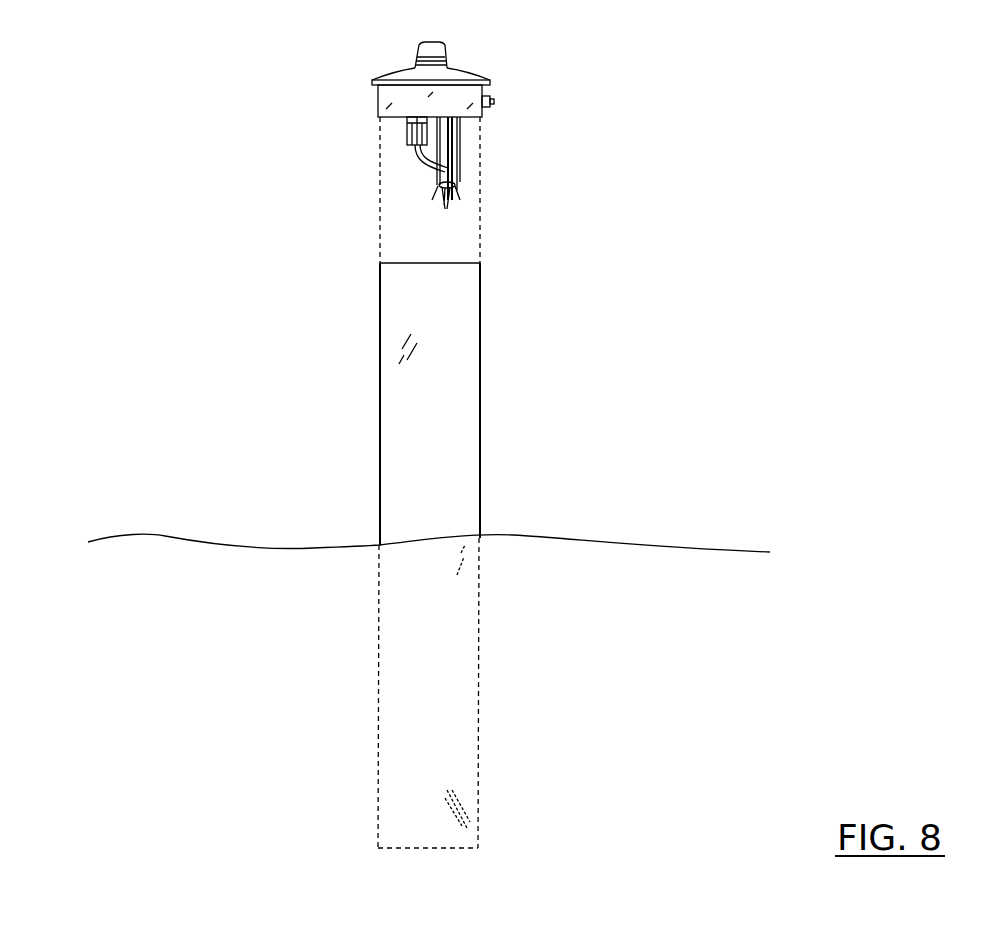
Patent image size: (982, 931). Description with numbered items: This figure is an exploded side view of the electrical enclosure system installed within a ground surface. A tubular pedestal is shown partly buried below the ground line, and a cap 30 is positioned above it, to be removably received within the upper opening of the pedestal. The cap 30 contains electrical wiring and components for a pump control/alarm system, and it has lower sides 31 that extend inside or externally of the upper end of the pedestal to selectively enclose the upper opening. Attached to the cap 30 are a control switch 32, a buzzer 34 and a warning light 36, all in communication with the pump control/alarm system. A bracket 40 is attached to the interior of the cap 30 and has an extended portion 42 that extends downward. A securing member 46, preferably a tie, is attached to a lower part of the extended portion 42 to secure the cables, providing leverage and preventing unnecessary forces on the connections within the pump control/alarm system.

The cap 30 is at (422, 68).
The lower sides 31 is at (383, 98).
The control switch 32 is at (494, 105).
The buzzer 34 is at (490, 84).
The warning light 36 is at (422, 52).
The bracket 40 is at (498, 156).
The extended portion 42 is at (462, 155).
The securing member 46 is at (485, 194).